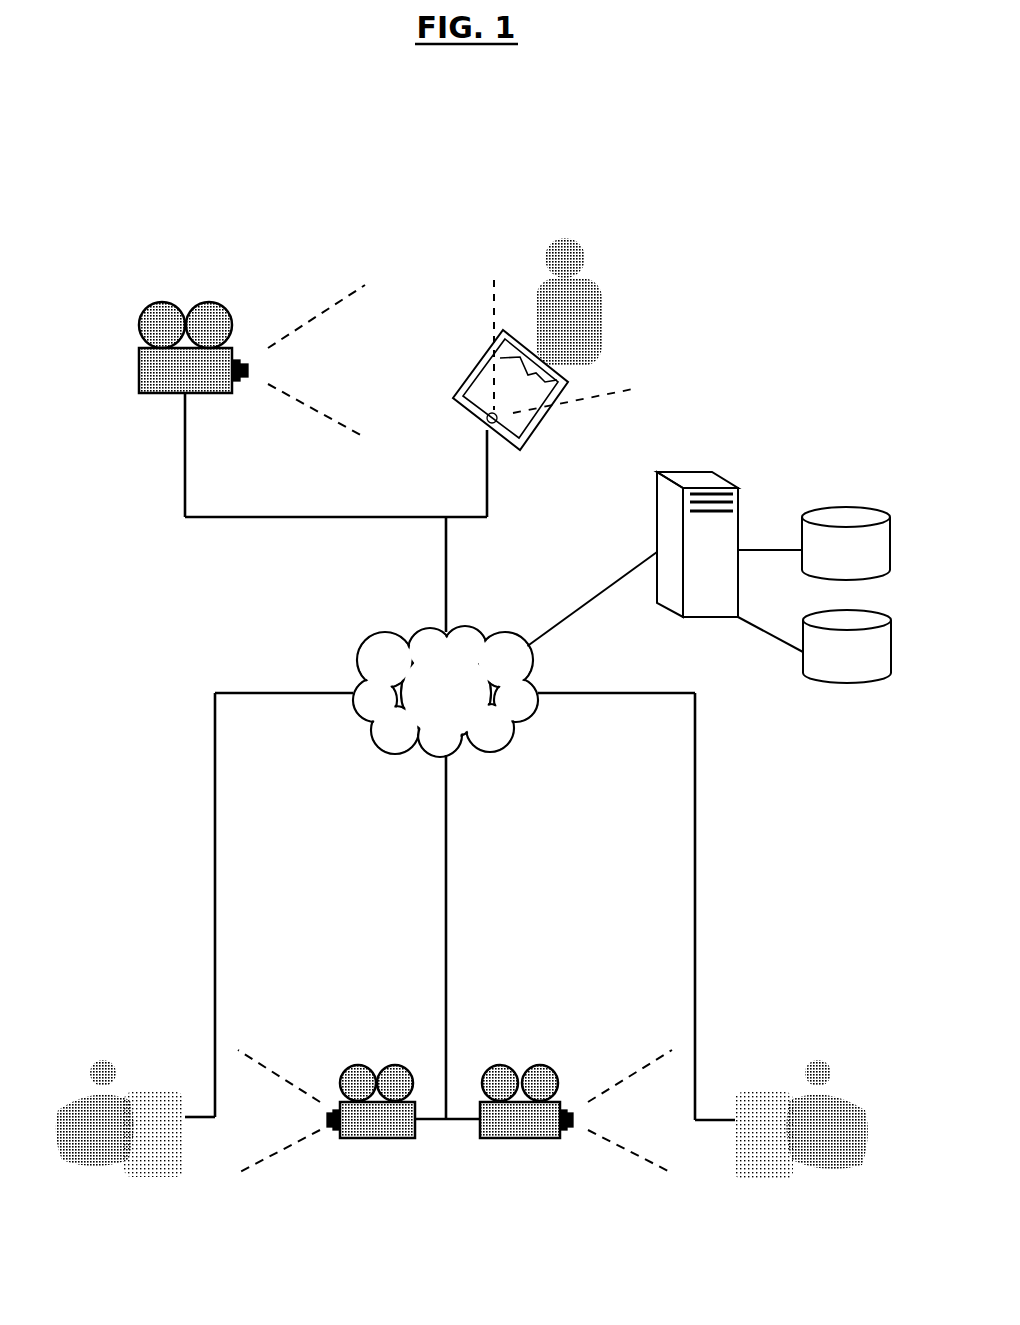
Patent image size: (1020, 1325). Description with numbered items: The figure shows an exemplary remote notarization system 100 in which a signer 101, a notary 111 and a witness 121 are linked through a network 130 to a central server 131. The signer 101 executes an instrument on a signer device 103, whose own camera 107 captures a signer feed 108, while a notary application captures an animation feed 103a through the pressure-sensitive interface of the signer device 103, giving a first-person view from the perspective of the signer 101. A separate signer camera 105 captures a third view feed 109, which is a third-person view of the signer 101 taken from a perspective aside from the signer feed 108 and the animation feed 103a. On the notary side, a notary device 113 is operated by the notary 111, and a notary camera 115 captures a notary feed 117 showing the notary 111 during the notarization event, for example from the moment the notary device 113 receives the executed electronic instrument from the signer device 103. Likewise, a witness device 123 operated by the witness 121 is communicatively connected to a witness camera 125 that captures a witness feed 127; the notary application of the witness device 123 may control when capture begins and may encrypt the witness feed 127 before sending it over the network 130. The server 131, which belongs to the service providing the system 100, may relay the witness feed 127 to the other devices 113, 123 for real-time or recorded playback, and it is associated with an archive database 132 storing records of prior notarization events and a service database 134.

The remote notarization system 100 is at (205, 222).
The signer 101 is at (609, 302).
The signer device 103 is at (548, 418).
The animation feed 103a is at (572, 383).
The signer camera 105 is at (193, 347).
The camera of the signer device 107 is at (487, 427).
The signer feed 108 is at (493, 320).
The third view feed 109 is at (291, 397).
The notary 111 is at (72, 1155).
The notary device 113 is at (157, 1180).
The notary camera 115 is at (371, 1101).
The notary feed 117 is at (297, 1142).
The witness 121 is at (838, 1175).
The witness device 123 is at (742, 1175).
The witness camera 125 is at (526, 1101).
The witness feed 127 is at (610, 1142).
The network 130 is at (445, 691).
The server 131 is at (697, 544).
The archive database 132 is at (846, 543).
The service database 134 is at (847, 646).